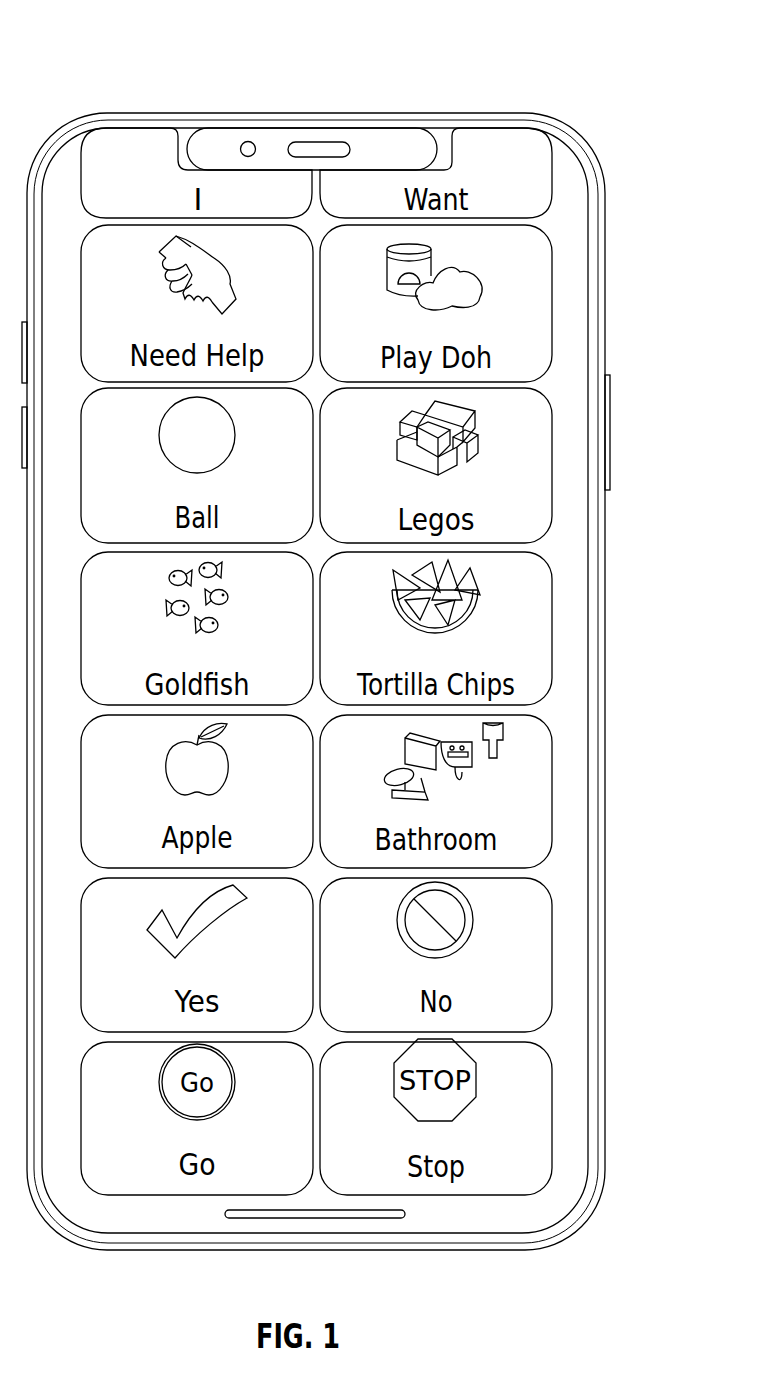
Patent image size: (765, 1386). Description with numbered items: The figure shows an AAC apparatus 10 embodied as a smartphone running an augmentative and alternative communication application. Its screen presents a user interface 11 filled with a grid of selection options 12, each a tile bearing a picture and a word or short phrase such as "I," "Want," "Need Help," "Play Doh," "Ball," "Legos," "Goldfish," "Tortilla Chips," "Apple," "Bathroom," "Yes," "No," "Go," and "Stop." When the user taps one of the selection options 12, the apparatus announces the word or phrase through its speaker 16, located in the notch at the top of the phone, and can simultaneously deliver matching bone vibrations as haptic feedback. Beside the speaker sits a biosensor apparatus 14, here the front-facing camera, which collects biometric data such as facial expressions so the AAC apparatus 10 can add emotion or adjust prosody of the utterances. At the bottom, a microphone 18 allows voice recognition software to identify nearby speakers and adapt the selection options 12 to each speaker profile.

The AAC apparatus 10 is at (127, 44).
The user interface 11 is at (560, 379).
The selection options 12 is at (490, 292).
The biosensor apparatus 14 is at (247, 142).
The speaker 16 is at (318, 142).
The microphone 18 is at (253, 1218).